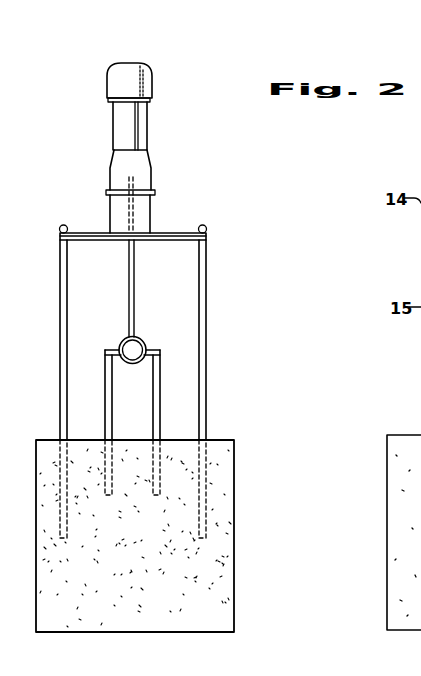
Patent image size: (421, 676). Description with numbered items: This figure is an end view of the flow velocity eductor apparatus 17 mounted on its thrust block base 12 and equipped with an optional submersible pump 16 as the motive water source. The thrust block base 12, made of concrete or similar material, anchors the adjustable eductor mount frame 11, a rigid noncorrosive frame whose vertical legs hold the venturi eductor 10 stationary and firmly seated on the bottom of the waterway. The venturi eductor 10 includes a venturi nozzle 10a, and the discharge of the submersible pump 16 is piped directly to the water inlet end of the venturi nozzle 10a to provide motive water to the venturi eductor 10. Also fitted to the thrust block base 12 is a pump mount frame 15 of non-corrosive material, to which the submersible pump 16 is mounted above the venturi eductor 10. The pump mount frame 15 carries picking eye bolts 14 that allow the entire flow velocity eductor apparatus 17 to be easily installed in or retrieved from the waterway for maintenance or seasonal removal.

The venturi eductor 10 is at (146, 339).
The venturi nozzle 10a is at (130, 338).
The adjustable eductor mount frame 11 is at (105, 367).
The thrust block base 12 is at (234, 485).
The picking eye bolts 14 is at (59, 225).
The pump mount frame 15 is at (60, 268).
The submersible pump 16 is at (141, 61).
The flow velocity eductor apparatus 17 is at (225, 187).